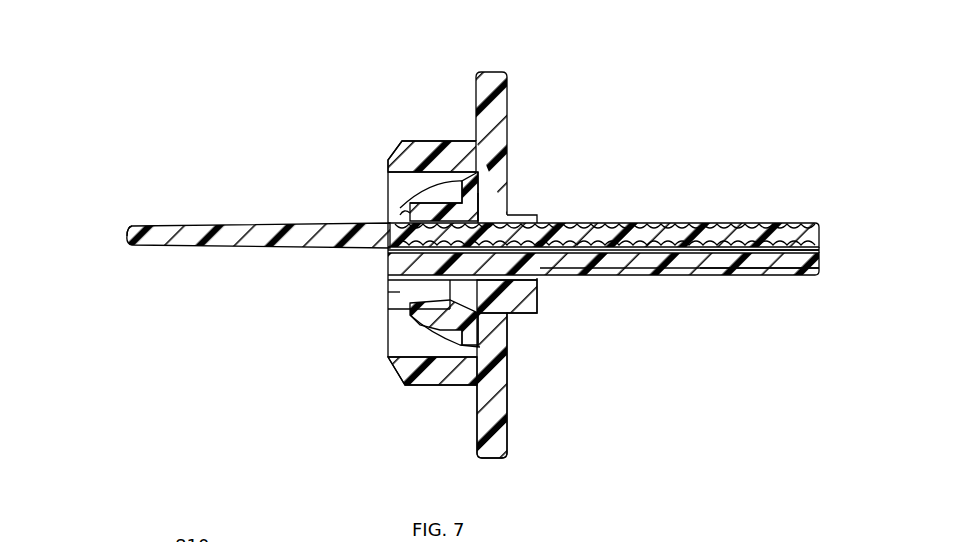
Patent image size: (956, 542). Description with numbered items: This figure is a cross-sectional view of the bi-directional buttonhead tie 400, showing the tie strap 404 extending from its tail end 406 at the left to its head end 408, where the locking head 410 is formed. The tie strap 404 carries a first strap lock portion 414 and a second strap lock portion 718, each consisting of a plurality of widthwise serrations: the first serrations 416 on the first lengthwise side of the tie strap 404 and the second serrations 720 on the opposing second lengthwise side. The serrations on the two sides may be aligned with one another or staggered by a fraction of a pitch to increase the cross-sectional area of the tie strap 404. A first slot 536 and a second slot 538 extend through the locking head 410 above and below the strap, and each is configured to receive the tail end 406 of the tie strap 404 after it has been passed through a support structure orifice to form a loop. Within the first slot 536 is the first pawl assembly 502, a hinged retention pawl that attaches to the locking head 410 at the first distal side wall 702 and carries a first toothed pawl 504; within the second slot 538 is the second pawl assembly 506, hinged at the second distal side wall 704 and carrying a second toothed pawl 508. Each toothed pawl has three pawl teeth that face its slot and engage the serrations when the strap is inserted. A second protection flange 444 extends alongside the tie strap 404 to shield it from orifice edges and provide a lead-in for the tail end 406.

The bi-directional buttonhead tie 400 is at (403, 70).
The tie strap 404 is at (196, 223).
The tail end 406 is at (122, 240).
The head end 408 is at (388, 160).
The locking head 410 is at (500, 103).
The first strap lock portion 414 is at (752, 210).
The first serrations 416 is at (790, 245).
The second protection flange 444 is at (535, 218).
The first pawl assembly 502 is at (462, 190).
The first toothed pawl 504 is at (470, 205).
The second pawl assembly 506 is at (462, 335).
The second toothed pawl 508 is at (440, 300).
The first slot 536 is at (410, 213).
The second slot 538 is at (400, 292).
The first distal side wall 702 is at (398, 185).
The second distal side wall 704 is at (410, 357).
The second strap lock portion 718 is at (752, 265).
The second serrations 720 is at (782, 250).